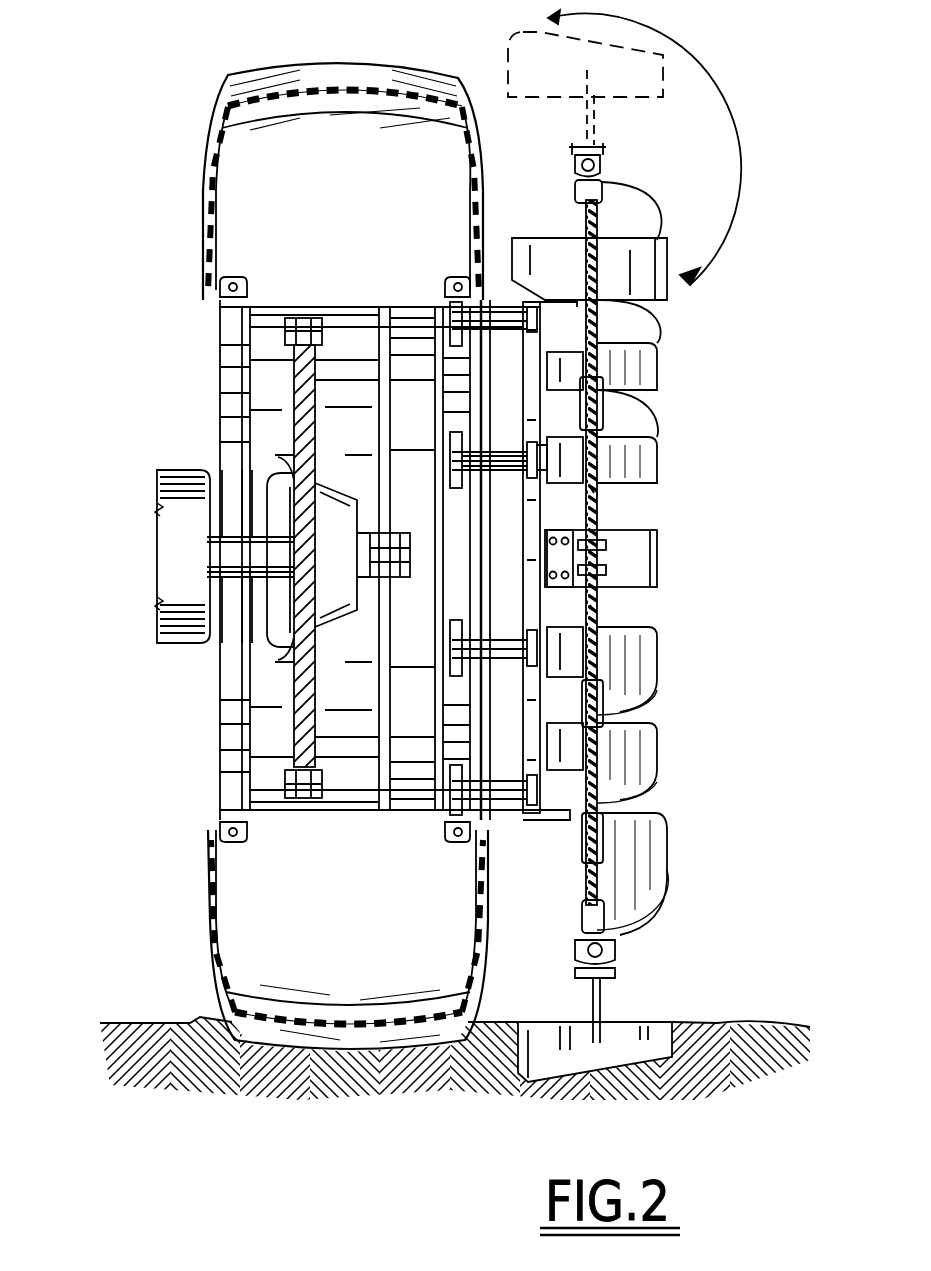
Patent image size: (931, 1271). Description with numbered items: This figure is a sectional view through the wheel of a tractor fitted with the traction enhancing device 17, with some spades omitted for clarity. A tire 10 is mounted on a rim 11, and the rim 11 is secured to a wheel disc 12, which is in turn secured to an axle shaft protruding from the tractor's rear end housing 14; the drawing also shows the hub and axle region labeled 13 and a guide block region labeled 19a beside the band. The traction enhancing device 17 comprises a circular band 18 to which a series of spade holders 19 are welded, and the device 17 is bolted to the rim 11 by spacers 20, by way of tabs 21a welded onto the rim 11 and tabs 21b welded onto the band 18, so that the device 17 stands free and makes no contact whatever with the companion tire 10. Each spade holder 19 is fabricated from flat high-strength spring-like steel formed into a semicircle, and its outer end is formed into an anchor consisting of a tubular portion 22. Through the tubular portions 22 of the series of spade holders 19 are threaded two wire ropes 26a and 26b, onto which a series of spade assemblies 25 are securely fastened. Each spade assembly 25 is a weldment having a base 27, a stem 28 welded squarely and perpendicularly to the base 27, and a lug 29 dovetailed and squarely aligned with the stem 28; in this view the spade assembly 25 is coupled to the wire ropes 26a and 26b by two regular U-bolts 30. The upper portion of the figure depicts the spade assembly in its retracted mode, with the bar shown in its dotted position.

The tire 10 is at (233, 162).
The rim 11 is at (258, 340).
The wheel disc 12 is at (295, 418).
The axle 13 is at (232, 548).
The rear end housing 14 is at (177, 582).
The traction enhancing device 17 is at (673, 740).
The circular band 18 is at (547, 690).
The spade holder 19 is at (653, 418).
The spring guide block with cable lock 19a is at (650, 560).
The spacer 20 is at (500, 443).
The tab 21a is at (440, 470).
The tab 21b is at (548, 478).
The tubular portion 22 is at (603, 410).
The spade assembly 25 is at (620, 1020).
The wire rope 26a is at (607, 490).
The wire rope 26b is at (610, 608).
The base 27 is at (603, 153).
The stem 28 is at (597, 113).
The lug 29 is at (643, 63).
The U-bolt 30 is at (580, 147).